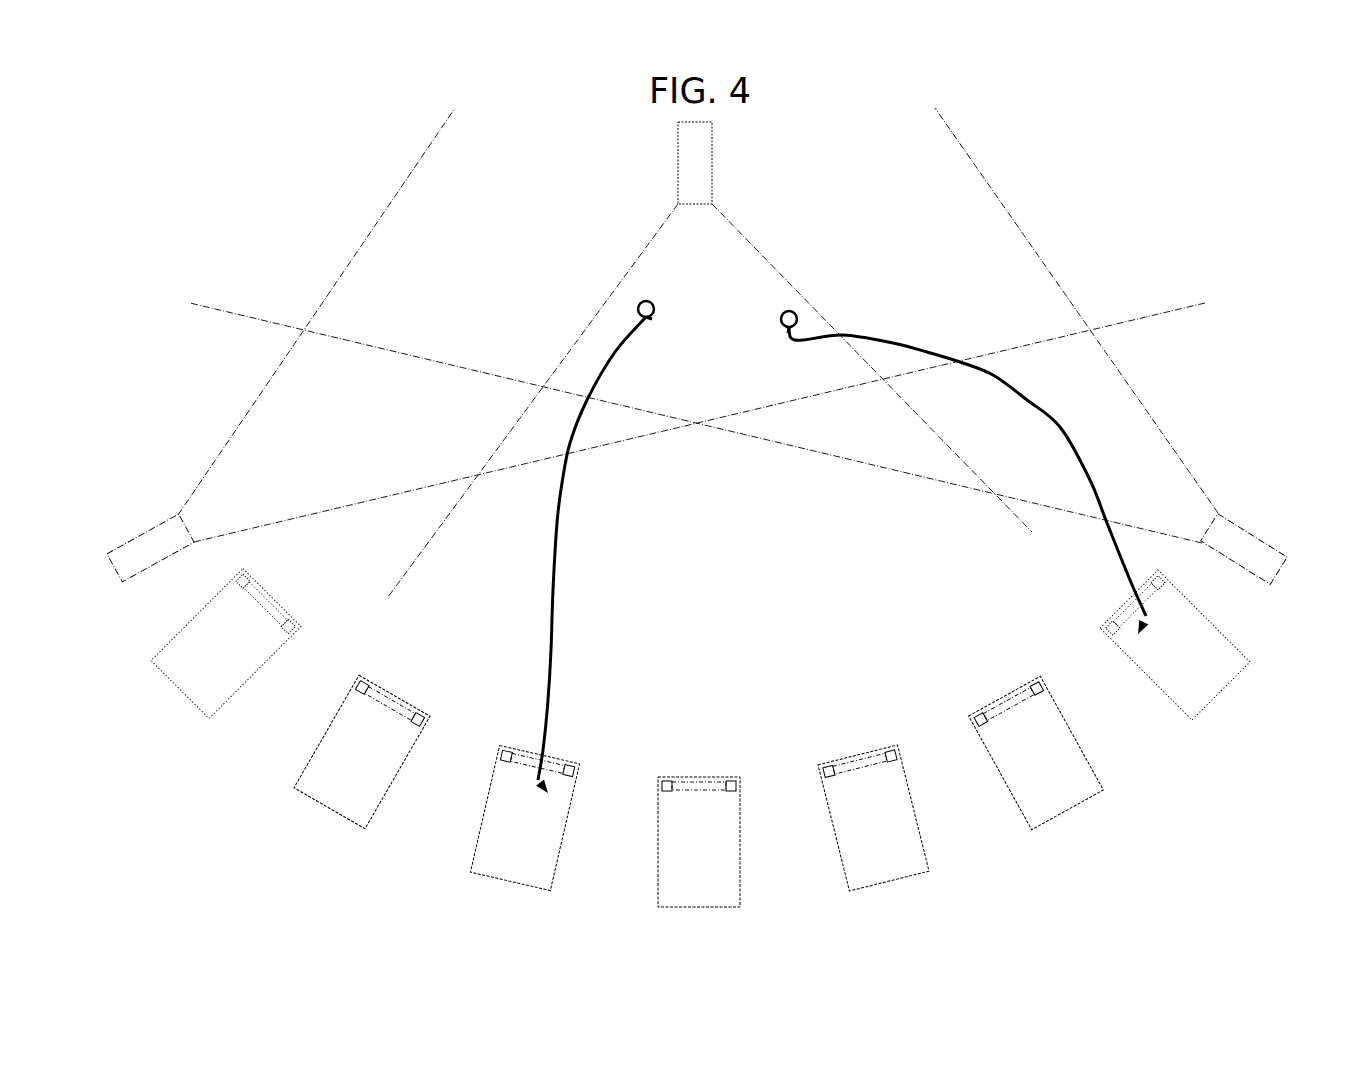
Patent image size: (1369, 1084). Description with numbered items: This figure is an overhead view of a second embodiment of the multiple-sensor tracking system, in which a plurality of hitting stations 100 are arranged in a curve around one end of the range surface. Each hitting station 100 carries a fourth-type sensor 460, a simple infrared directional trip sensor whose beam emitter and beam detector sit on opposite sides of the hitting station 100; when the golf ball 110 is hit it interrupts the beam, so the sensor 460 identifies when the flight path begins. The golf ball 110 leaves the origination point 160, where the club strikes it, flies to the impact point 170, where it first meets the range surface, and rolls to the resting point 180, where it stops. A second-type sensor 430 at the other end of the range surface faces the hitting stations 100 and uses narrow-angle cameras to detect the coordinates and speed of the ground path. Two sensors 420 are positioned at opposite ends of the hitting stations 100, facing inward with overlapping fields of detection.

The hitting station 100 is at (222, 642).
The golf ball 110 is at (650, 299).
The origination point 160 is at (550, 792).
The impact point 170 is at (606, 344).
The resting point 180 is at (662, 317).
The third-type sensor 420 is at (150, 548).
The second-type sensor 430 is at (695, 161).
The fourth-type sensor 460 is at (290, 618).